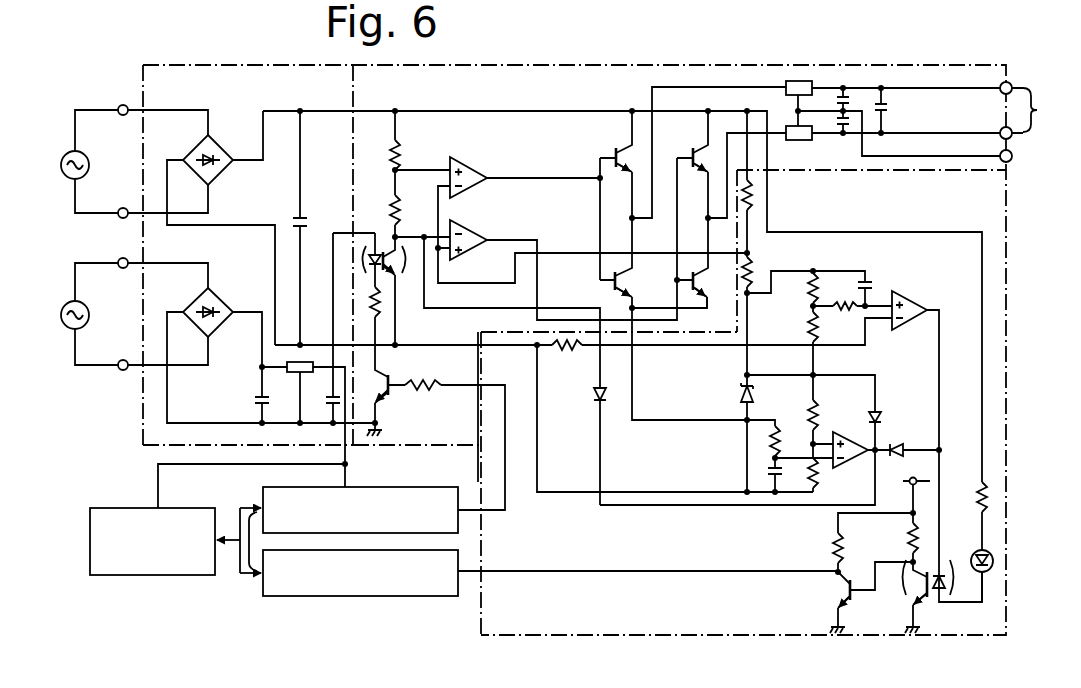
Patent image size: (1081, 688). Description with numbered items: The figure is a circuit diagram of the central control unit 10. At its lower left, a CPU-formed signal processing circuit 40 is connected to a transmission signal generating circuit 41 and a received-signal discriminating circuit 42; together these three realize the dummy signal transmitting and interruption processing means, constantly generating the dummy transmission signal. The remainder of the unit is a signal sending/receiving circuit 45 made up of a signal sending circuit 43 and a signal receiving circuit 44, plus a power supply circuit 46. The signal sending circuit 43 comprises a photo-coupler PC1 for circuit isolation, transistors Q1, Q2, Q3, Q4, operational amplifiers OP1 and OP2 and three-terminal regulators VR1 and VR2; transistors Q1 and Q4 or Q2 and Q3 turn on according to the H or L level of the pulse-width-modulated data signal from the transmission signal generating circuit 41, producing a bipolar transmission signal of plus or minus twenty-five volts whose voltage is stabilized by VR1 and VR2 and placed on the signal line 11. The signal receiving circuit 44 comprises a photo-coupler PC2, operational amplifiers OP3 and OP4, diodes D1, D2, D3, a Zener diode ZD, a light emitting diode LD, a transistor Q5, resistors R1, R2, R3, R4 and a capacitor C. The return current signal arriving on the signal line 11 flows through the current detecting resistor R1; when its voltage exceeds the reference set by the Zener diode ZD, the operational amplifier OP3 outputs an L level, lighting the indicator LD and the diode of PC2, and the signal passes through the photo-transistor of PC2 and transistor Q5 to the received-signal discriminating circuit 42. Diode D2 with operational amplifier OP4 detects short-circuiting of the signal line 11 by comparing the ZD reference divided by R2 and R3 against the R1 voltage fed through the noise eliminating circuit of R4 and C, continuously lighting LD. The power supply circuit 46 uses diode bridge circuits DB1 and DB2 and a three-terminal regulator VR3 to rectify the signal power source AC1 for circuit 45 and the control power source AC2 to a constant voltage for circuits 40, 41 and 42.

The central control unit 10 is at (70, 608).
The signal line 11 is at (1035, 122).
The signal processing circuit 40 is at (175, 577).
The transmission signal generating circuit 41 is at (415, 487).
The received-signal discriminating circuit 42 is at (405, 597).
The signal sending circuit 43 is at (388, 93).
The signal receiving circuit 44 is at (523, 631).
The signal sending/receiving circuit 45 is at (648, 66).
The power supply circuit 46 is at (183, 93).
The signal power source AC1 is at (94, 161).
The control power source AC2 is at (94, 314).
The diode bridge circuit DB1 is at (216, 149).
The diode bridge circuit DB2 is at (216, 301).
The three-terminal regulator VR1 is at (798, 80).
The three-terminal regulator VR2 is at (798, 141).
The three-terminal regulator VR3 is at (293, 373).
The photo-coupler PC1 is at (385, 246).
The photo-coupler PC2 is at (940, 598).
The operational amplifier OP1 is at (472, 163).
The operational amplifier OP2 is at (472, 226).
The operational amplifier OP3 is at (901, 291).
The operational amplifier OP4 is at (852, 423).
The transistor Q1 is at (614, 164).
The transistor Q2 is at (639, 263).
The transistor Q3 is at (690, 164).
The transistor Q4 is at (715, 263).
The transistor Q5 is at (857, 573).
The current detecting resistor R1 is at (567, 359).
The resistor R2 is at (798, 424).
The resistor R3 is at (829, 476).
The resistor R4 is at (779, 444).
The capacitor C is at (785, 476).
The diode D1 is at (588, 401).
The diode D2 is at (889, 406).
The diode D3 is at (906, 439).
The Zener diode ZD is at (730, 395).
The light emitting diode LD is at (994, 556).